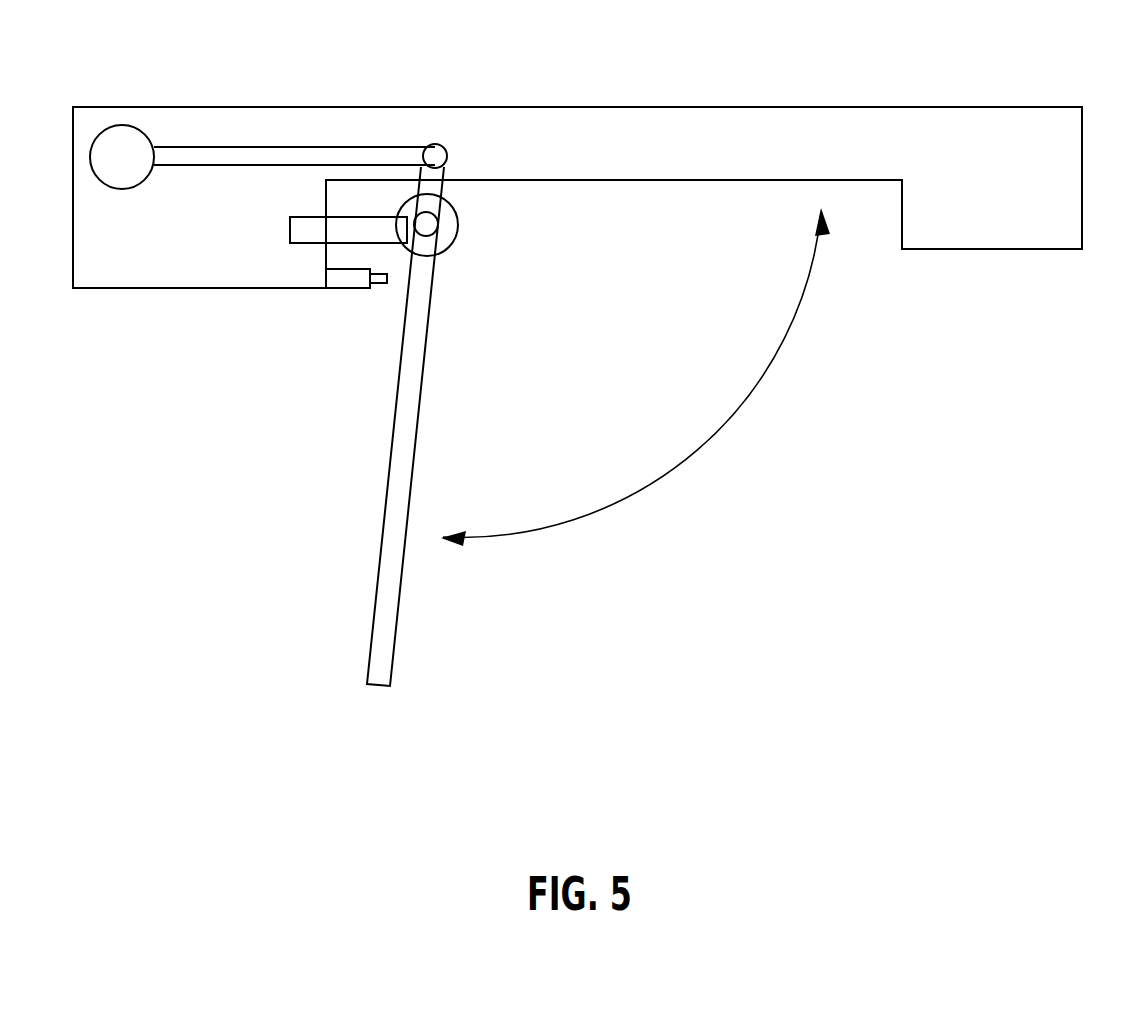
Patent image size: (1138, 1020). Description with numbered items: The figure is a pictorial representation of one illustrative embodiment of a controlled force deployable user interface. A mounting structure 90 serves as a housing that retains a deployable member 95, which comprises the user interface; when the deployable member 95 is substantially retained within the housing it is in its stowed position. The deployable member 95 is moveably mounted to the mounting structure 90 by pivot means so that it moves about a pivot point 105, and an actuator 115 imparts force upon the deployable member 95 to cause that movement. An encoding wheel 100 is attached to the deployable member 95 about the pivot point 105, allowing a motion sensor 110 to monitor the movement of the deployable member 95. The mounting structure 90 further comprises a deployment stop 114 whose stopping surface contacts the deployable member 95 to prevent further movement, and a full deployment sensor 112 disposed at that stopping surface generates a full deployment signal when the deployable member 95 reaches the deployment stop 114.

The mounting structure 90 is at (1082, 172).
The deployable member 95 is at (402, 598).
The encoding wheel 100 is at (458, 222).
The pivot point 105 is at (440, 233).
The motion sensor 110 is at (290, 229).
The full deployment sensor 112 is at (382, 289).
The deployment stop 114 is at (335, 289).
The actuator 115 is at (123, 125).